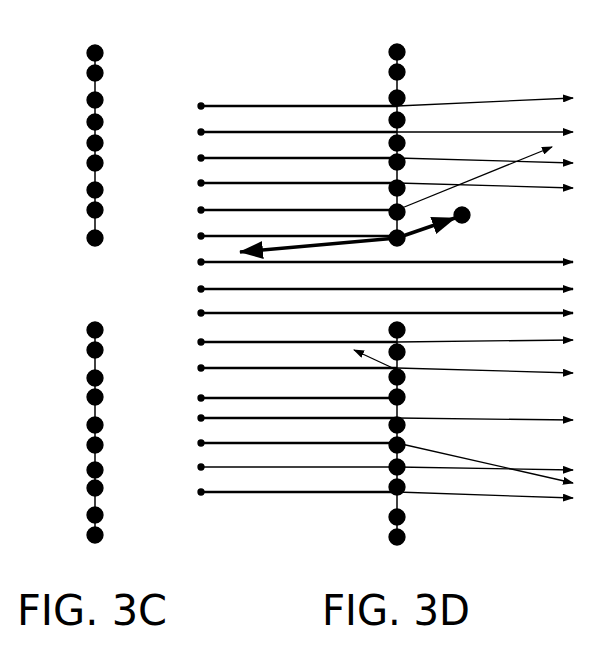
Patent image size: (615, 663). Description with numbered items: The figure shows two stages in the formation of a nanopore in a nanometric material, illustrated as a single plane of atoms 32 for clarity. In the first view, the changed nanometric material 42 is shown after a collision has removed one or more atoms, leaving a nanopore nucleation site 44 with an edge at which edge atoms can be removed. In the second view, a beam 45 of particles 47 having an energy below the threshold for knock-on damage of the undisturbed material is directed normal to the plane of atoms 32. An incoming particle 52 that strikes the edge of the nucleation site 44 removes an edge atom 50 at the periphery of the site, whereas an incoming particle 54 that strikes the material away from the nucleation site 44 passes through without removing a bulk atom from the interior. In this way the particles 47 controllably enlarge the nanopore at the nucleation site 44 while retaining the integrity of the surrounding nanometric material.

In FIG. 3D, the plane of atoms 32 is at (406, 52).
In FIG. 3C, the changed nanometric material 42 is at (57, 184).
In FIG. 3C, the nanopore nucleation site 44 is at (77, 284).
In FIG. 3D, the nanopore nucleation site 44 is at (388, 300).
In FIG. 3D, the beam of particles 45 is at (221, 93).
In FIG. 3D, the particles 47 is at (198, 210).
In FIG. 3D, the edge atom 50 is at (471, 215).
In FIG. 3D, the incoming particle 52 is at (401, 245).
In FIG. 3D, the incoming particle 54 is at (198, 132).